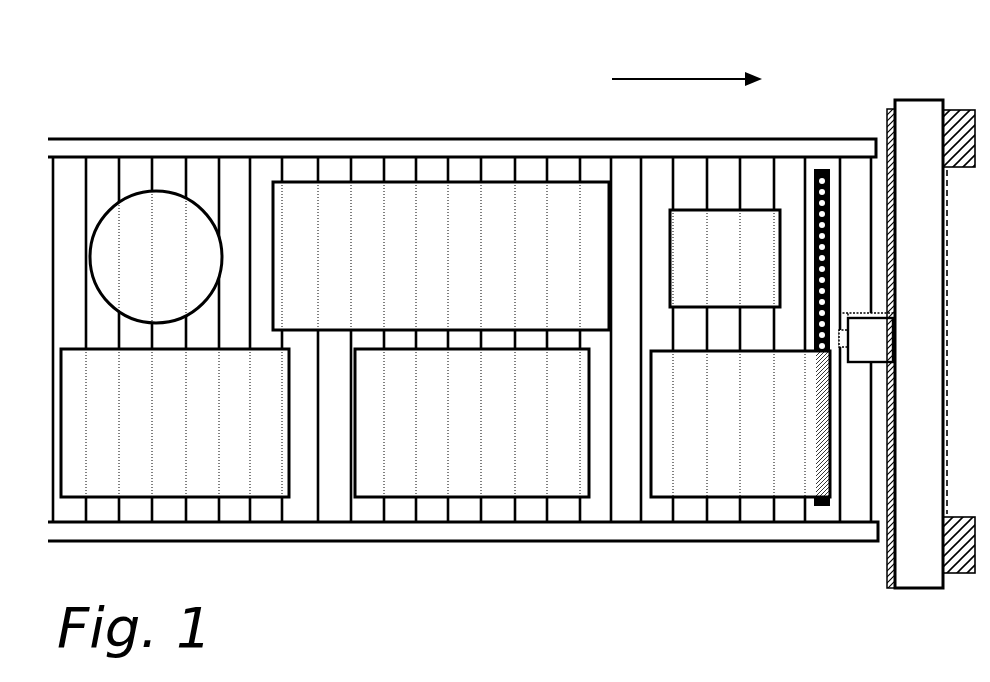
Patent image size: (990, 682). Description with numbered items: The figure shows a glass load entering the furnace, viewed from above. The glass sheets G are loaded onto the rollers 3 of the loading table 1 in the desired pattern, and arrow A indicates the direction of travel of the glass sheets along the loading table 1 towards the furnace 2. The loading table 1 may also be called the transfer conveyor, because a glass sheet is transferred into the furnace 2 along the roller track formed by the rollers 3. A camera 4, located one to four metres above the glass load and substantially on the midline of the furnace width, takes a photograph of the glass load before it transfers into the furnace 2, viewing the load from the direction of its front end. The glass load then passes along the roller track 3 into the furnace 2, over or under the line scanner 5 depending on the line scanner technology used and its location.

The loading table 1 is at (511, 331).
The furnace 2 is at (957, 110).
The rollers 3 is at (318, 497).
The camera 4 is at (868, 337).
The line scanner 5 is at (828, 505).